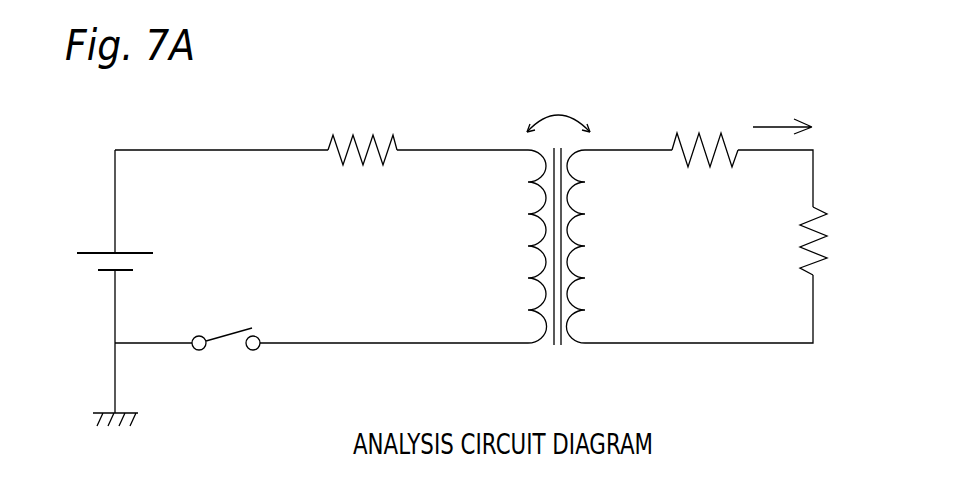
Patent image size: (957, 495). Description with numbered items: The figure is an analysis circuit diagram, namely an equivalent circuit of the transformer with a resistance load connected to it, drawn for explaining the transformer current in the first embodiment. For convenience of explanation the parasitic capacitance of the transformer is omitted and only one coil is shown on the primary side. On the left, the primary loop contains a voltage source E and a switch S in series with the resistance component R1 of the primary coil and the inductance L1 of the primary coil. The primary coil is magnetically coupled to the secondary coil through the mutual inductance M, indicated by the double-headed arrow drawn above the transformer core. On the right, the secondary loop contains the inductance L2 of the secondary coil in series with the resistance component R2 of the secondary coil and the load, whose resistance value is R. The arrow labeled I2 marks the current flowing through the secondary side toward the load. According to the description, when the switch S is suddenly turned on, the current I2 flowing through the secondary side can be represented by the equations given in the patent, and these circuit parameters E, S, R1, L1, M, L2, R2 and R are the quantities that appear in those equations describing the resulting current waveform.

The voltage source E is at (99, 261).
The switch S is at (226, 363).
The resistance component of the primary coil R1 is at (362, 127).
The inductance of the primary coil L1 is at (501, 246).
The mutual inductance M is at (558, 211).
The inductance of the secondary coil L2 is at (606, 246).
The resistance component of the secondary coil R2 is at (705, 128).
The current flowing through the secondary side I2 is at (782, 102).
The resistance value of a load R is at (829, 241).